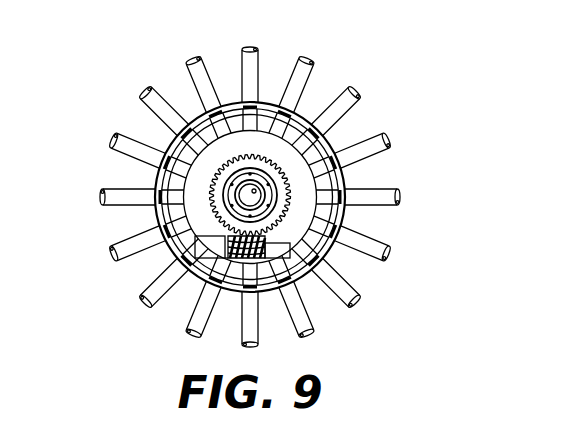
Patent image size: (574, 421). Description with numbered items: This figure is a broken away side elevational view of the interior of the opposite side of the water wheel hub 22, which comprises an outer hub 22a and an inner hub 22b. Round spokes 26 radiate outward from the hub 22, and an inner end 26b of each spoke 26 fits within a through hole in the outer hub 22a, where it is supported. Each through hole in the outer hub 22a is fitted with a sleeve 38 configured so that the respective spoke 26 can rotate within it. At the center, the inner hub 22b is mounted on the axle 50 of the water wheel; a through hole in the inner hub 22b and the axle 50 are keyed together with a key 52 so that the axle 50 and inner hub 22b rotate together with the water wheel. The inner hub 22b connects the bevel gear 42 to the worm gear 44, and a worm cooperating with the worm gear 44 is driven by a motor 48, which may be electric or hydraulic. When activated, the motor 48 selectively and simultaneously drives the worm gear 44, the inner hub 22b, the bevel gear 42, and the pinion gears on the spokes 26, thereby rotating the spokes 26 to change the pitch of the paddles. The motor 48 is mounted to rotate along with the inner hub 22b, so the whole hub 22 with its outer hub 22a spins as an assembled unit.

The hub 22 is at (148, 217).
The outer hub 22a is at (177, 257).
The inner hub 22b is at (170, 152).
The spoke 26 is at (352, 99).
The inner end of spoke 26b is at (352, 181).
The sleeve 38 is at (207, 113).
The bevel gear 42 is at (345, 214).
The worm gear 44 is at (228, 208).
The motor 48 is at (290, 252).
The axle 50 is at (195, 260).
The key 52 is at (336, 134).